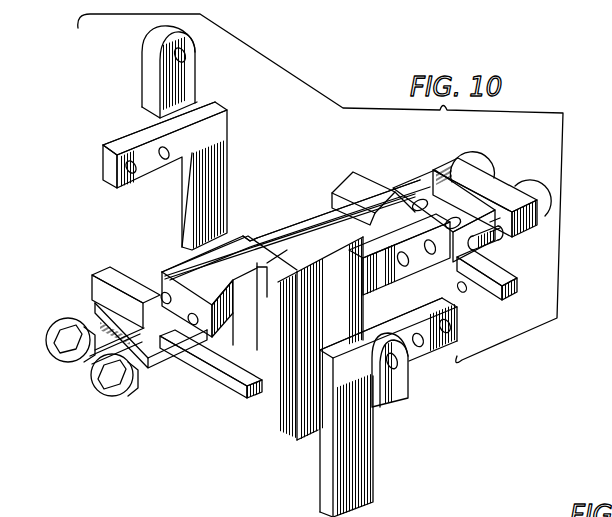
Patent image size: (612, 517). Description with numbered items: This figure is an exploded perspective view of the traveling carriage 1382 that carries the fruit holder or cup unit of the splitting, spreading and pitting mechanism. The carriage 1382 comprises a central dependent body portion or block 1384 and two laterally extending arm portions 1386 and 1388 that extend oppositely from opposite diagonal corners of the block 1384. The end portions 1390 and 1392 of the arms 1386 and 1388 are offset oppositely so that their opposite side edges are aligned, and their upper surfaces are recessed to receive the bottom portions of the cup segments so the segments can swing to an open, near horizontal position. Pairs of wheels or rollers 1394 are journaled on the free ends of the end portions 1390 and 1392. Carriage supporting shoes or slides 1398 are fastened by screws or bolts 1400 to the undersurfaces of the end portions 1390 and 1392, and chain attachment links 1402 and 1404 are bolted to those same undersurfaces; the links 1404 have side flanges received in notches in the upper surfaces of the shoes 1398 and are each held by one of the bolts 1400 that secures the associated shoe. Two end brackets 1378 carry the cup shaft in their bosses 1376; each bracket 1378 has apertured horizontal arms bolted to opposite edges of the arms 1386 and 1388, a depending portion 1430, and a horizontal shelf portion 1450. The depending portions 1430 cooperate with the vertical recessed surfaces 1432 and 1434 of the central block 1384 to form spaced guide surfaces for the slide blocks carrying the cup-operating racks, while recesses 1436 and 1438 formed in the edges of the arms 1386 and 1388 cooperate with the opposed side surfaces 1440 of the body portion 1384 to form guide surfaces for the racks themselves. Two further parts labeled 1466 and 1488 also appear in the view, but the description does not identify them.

The boss 1376 is at (156, 83).
The end bracket 1378 is at (217, 128).
The carriage 1382 is at (290, 225).
The central dependent body portion or block 1384 is at (362, 294).
The laterally extending arm portion 1386 is at (190, 265).
The laterally extending arm portion 1388 is at (410, 200).
The end portion of carriage arm 1390 is at (133, 327).
The end portion of carriage arm 1392 is at (452, 197).
The wheels or rollers 1394 is at (80, 374).
The carriage supporting shoe or slide 1398 is at (103, 272).
The screw or bolt 1400 is at (188, 312).
The chain attachment link 1402 is at (484, 250).
The chain attachment link 1404 is at (182, 372).
The depending portion of bracket 1430 is at (371, 458).
The vertical recessed surface 1432 is at (287, 224).
The vertical recessed surface 1434 is at (358, 222).
The recess 1436 is at (405, 212).
The recess 1438 is at (257, 277).
The side surface of body portion 1440 is at (270, 345).
The horizontal shelf portion 1450 is at (193, 100).
The rail edge 1466 is at (335, 235).
The column 1488 is at (295, 443).